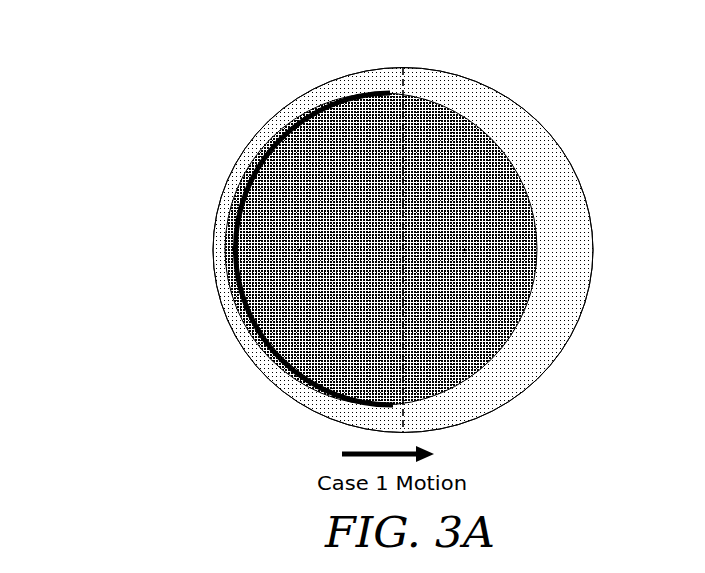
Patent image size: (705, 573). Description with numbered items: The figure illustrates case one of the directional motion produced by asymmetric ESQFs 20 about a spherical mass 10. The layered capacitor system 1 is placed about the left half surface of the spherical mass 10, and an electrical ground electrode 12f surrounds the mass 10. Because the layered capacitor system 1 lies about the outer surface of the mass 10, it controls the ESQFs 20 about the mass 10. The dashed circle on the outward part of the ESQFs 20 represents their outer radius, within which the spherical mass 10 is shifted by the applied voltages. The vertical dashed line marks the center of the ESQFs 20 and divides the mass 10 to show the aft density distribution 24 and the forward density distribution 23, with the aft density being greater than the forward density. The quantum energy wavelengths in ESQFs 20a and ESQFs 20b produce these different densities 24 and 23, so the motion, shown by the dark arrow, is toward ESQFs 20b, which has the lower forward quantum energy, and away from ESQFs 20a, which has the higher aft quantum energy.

The layered capacitor system 1 is at (275, 372).
The spherical mass 10 is at (427, 100).
The electrical ground electrode 12f is at (505, 345).
The asymmetric ESQFs 20 is at (537, 121).
The ESQFs (aft region) 20a is at (218, 225).
The ESQFs (forward region) 20b is at (560, 267).
The forward quantum field density (rho_EG)_FWD 23 is at (465, 250).
The aft quantum field density (rho_ES)_AFT 24 is at (300, 250).